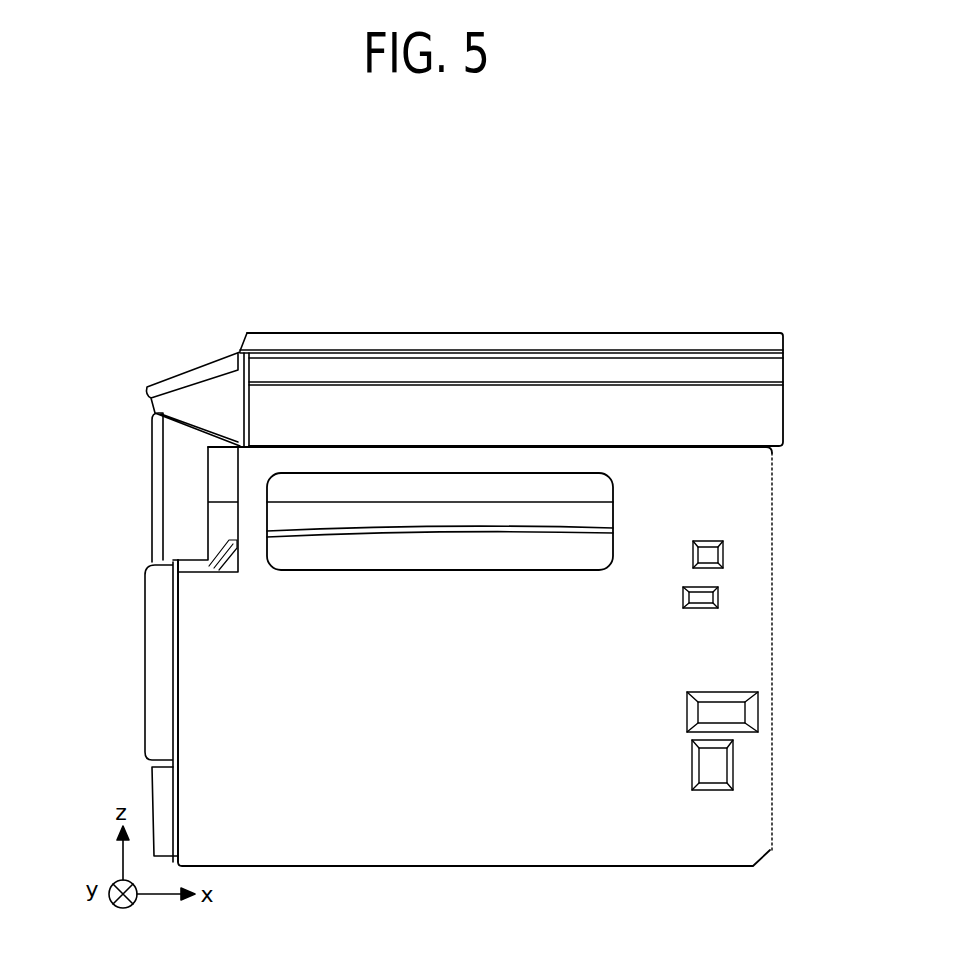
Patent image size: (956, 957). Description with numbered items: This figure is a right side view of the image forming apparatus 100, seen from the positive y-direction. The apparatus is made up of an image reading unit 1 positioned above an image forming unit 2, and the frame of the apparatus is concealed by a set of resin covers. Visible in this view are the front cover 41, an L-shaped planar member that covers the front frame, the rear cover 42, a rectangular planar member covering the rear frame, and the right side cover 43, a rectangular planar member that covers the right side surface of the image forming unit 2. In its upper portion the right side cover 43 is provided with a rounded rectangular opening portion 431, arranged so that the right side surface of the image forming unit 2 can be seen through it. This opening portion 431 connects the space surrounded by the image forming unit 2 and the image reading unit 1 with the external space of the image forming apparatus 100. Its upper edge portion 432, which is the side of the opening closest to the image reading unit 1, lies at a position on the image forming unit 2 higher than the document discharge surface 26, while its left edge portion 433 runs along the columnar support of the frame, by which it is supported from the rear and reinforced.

The image forming apparatus 100 is at (155, 343).
The image reading unit 1 is at (787, 329).
The image forming unit 2 is at (788, 449).
The document discharge surface 26 is at (496, 540).
The front cover 41 is at (147, 666).
The rear cover 42 is at (768, 803).
The right side cover 43 is at (465, 828).
The opening portion 431 is at (292, 520).
The upper edge portion 432 is at (398, 463).
The left edge portion 433 is at (253, 508).